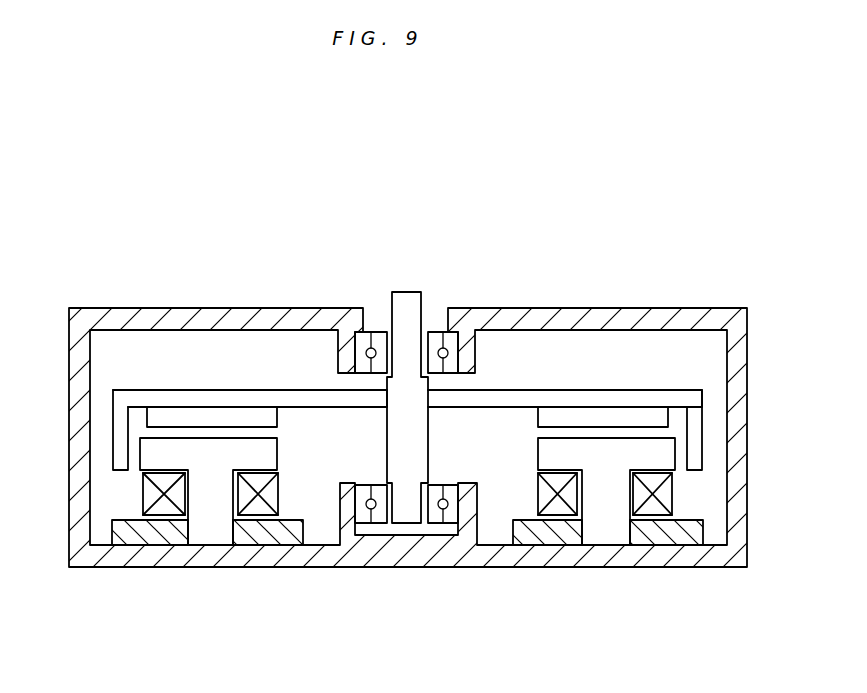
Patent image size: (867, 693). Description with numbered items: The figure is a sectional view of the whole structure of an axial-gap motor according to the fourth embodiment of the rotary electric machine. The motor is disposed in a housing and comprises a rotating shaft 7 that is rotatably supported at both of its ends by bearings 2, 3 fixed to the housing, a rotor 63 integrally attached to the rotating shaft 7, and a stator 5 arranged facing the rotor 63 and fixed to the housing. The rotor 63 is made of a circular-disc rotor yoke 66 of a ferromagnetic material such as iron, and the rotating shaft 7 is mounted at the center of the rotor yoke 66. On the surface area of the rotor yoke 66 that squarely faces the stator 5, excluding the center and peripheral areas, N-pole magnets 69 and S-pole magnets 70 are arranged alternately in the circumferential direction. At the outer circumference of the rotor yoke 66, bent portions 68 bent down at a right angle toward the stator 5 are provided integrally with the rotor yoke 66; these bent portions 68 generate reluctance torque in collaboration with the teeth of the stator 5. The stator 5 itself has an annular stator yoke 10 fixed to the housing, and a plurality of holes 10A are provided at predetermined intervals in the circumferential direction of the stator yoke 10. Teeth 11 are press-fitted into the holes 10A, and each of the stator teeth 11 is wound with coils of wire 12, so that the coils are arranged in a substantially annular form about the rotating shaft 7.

The bearing 2 is at (453, 343).
The bearing 3 is at (453, 488).
The stator 5 is at (375, 542).
The rotating shaft 7 is at (415, 307).
The stator yoke 10 is at (553, 535).
The hole 10A is at (236, 538).
The tooth 11 is at (213, 517).
The coil of wire 12 is at (270, 492).
The rotor 63 is at (405, 403).
The rotor yoke 66 is at (280, 398).
The bent portion 68 is at (120, 417).
The N-pole magnet 69 is at (185, 417).
The S-pole magnet 70 is at (640, 412).